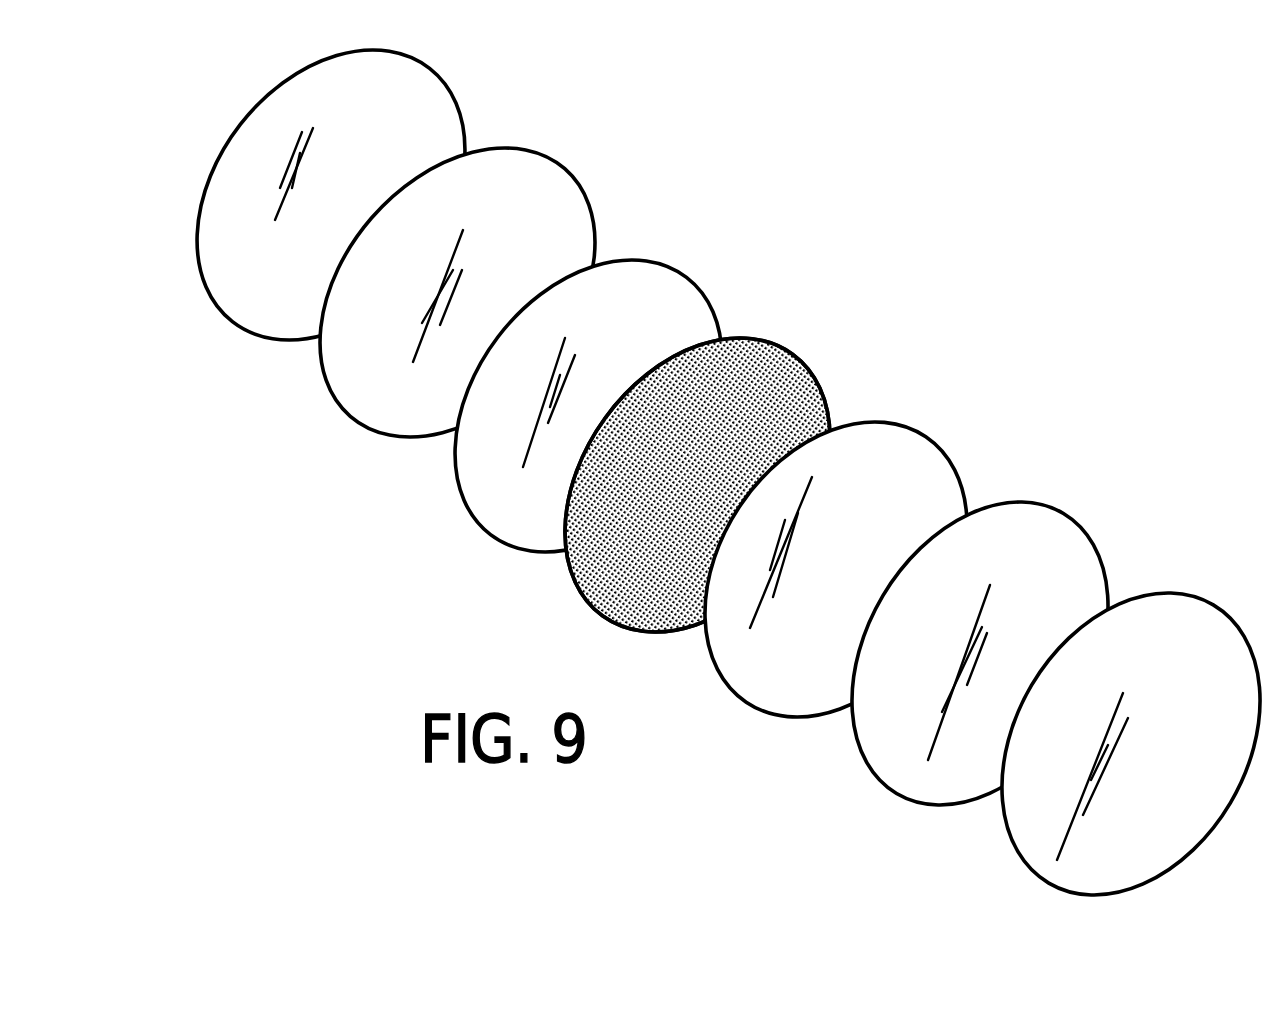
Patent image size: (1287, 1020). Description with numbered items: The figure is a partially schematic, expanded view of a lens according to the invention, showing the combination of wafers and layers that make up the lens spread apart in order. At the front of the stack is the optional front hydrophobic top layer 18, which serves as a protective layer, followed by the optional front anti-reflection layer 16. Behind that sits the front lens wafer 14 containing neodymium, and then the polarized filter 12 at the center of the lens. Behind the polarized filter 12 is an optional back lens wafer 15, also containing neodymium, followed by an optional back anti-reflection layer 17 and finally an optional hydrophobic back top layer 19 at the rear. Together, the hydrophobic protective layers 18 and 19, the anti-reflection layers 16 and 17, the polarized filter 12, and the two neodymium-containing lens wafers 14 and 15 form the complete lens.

The polarized filter 12 is at (800, 353).
The front lens wafer 14 is at (940, 441).
The back lens wafer 15 is at (675, 270).
The front anti-reflection layer 16 is at (1077, 522).
The back anti-reflection layer 17 is at (572, 175).
The front hydrophobic top layer 18 is at (1210, 600).
The hydrophobic back top layer 19 is at (452, 87).